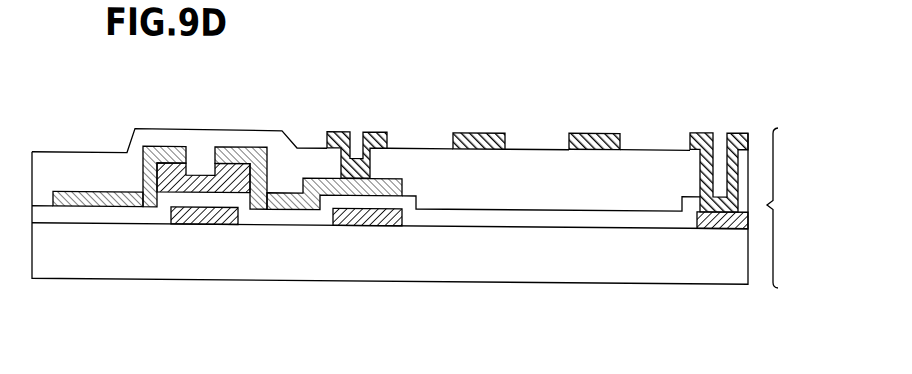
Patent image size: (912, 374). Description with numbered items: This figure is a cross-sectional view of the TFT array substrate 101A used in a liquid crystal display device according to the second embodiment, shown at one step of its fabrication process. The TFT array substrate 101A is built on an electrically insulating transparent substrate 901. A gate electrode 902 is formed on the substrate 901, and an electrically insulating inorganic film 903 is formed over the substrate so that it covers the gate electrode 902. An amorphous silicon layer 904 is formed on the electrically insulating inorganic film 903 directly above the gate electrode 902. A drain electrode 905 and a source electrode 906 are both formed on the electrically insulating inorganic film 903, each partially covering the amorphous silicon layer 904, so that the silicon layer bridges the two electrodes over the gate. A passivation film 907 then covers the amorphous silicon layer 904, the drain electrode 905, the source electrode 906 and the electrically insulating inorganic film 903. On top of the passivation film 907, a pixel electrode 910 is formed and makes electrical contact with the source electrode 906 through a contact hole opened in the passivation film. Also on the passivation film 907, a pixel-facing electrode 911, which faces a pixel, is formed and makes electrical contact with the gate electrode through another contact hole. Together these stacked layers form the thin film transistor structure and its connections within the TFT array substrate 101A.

The electrically insulating transparent substrate 901 is at (390, 237).
The gate electrode 902 is at (221, 274).
The electrically insulating inorganic film 903 is at (415, 274).
The amorphous silicon layer 904 is at (205, 137).
The drain electrode 905 is at (98, 148).
The source electrode 906 is at (327, 138).
The passivation film 907 is at (536, 115).
The pixel electrode 910 is at (350, 113).
The pixel-facing electrode 911 is at (709, 139).
The TFT array substrate 101A is at (810, 208).